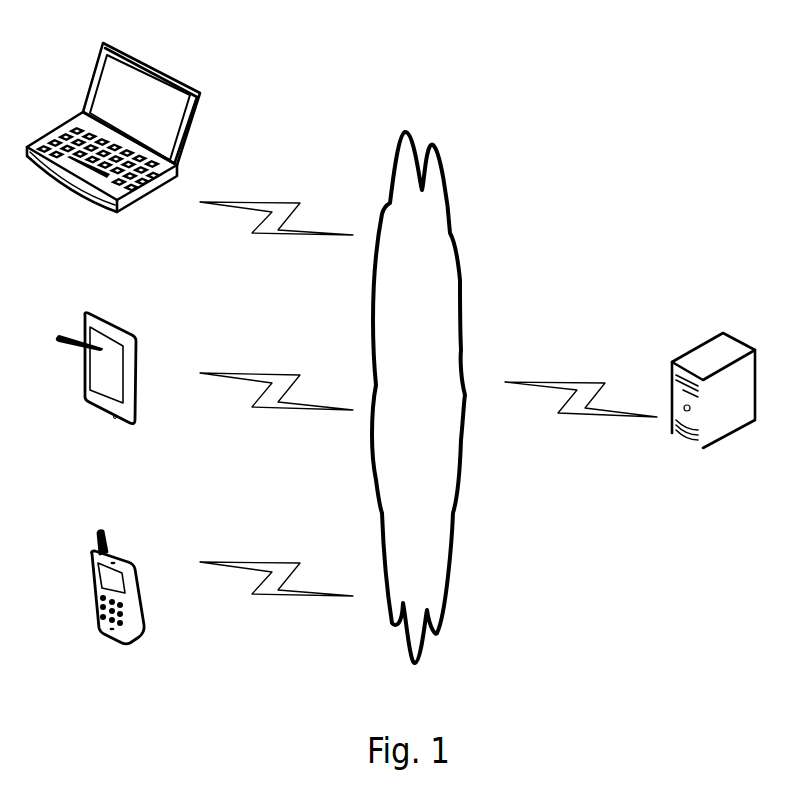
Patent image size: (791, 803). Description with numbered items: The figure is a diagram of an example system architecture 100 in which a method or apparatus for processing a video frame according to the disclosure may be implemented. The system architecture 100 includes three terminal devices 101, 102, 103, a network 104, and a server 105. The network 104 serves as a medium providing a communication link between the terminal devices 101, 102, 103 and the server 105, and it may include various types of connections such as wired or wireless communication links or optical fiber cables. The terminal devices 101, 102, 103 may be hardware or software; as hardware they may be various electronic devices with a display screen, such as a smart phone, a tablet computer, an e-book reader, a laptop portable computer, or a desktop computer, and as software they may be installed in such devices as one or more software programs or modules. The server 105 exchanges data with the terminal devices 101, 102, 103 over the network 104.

The system architecture 100 is at (686, 32).
The terminal device 101 is at (117, 608).
The terminal device 102 is at (96, 390).
The terminal device 103 is at (113, 148).
The network 104 is at (418, 397).
The server 105 is at (713, 409).